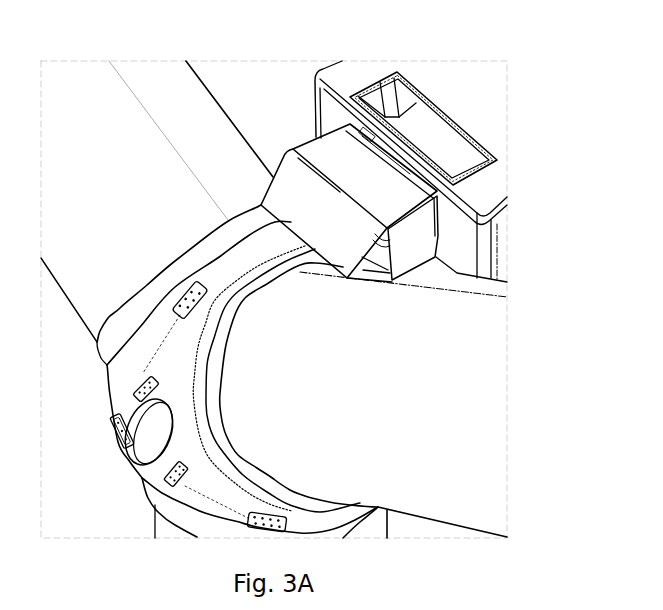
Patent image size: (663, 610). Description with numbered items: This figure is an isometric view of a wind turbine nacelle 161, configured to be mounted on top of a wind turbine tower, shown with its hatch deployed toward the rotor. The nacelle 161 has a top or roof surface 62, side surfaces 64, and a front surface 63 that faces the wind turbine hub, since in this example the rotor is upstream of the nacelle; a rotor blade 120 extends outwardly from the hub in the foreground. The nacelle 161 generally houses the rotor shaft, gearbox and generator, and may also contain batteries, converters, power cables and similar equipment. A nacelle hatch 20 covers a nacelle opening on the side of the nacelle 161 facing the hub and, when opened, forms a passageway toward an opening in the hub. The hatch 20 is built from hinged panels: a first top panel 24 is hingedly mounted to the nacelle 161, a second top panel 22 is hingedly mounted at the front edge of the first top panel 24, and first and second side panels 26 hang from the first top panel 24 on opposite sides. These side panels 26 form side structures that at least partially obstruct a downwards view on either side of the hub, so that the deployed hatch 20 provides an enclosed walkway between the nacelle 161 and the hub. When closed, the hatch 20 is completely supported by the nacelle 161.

The nacelle hatch 20 is at (457, 303).
The second top panel 22 is at (270, 172).
The first top panel 24 is at (318, 155).
The side panel 26 is at (407, 282).
The top surface 62 is at (360, 72).
The front surface of the nacelle 63 is at (315, 98).
The side surfaces 64 is at (497, 247).
The rotor blade 120 is at (447, 508).
The nacelle 161 is at (321, 57).